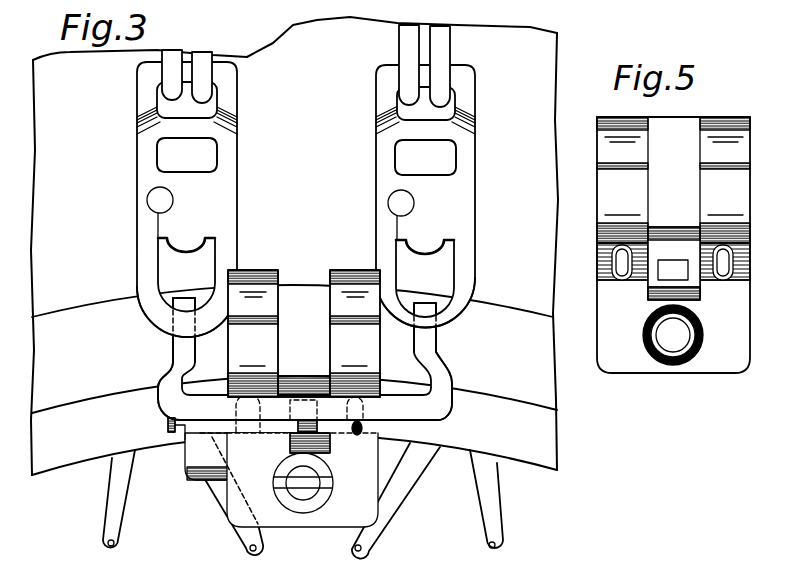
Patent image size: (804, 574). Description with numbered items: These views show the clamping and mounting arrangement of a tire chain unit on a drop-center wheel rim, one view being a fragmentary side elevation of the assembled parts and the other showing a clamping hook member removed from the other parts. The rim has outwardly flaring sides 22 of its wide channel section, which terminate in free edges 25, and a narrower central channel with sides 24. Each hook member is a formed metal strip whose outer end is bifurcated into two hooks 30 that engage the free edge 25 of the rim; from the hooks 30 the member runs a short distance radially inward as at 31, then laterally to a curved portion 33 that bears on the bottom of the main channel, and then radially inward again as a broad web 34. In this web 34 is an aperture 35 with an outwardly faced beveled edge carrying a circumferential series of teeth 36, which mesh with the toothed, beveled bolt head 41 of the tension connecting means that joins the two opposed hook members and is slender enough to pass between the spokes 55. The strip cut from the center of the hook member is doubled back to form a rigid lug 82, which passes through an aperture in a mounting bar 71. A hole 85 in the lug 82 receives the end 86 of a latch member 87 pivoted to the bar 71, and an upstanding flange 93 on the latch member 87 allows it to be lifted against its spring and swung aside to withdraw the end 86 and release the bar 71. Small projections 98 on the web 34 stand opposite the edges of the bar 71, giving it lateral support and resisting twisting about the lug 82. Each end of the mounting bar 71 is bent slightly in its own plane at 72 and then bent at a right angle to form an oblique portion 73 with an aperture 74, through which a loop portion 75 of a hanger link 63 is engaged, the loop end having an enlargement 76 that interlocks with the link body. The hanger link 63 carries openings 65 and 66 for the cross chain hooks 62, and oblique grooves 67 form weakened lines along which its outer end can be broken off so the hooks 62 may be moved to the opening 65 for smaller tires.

In FIG. 3, the sides of the wide channel section 22 is at (543, 380).
In FIG. 3, the sides of the narrower channel section 24 is at (548, 426).
In FIG. 3, the free edges 25 is at (509, 306).
In FIG. 3, the hook portion 30 is at (343, 269).
In FIG. 5, the hook portion 30 is at (713, 117).
In FIG. 3, the radially inward portion 31 is at (343, 330).
In FIG. 5, the radially inward portion 31 is at (708, 185).
In FIG. 3, the curved portion 33 is at (294, 378).
In FIG. 5, the curved portion 33 is at (678, 226).
In FIG. 3, the radially inward web portion 34 is at (354, 488).
In FIG. 5, the radially inward web portion 34 is at (742, 324).
In FIG. 5, the aperture 35 is at (683, 337).
In FIG. 5, the teeth 36 is at (650, 353).
In FIG. 3, the bolt head 41 is at (320, 497).
In FIG. 3, the spokes 55 is at (118, 526).
In FIG. 3, the hook members of the cross chains 62 is at (204, 66).
In FIG. 3, the hanger link 63 is at (228, 192).
In FIG. 3, the second opening 65 is at (207, 153).
In FIG. 3, the outermost opening 66 is at (211, 103).
In FIG. 3, the grooves 67 is at (234, 121).
In FIG. 3, the mounting bar 71 is at (407, 421).
In FIG. 3, the bent end portion 72 is at (163, 392).
In FIG. 3, the oblique end portion 73 is at (183, 303).
In FIG. 3, the aperture 74 is at (173, 342).
In FIG. 3, the loop portion 75 is at (147, 293).
In FIG. 3, the enlargement 76 is at (158, 200).
In FIG. 3, the lug portion 82 is at (330, 448).
In FIG. 5, the lug portion 82 is at (698, 289).
In FIG. 3, the hole 85 is at (291, 408).
In FIG. 5, the hole 85 is at (667, 267).
In FIG. 3, the latch end 86 is at (331, 411).
In FIG. 3, the latch member 87 is at (168, 421).
In FIG. 3, the upstanding flange 93 is at (200, 458).
In FIG. 3, the projections 98 is at (240, 407).
In FIG. 5, the projections 98 is at (610, 245).